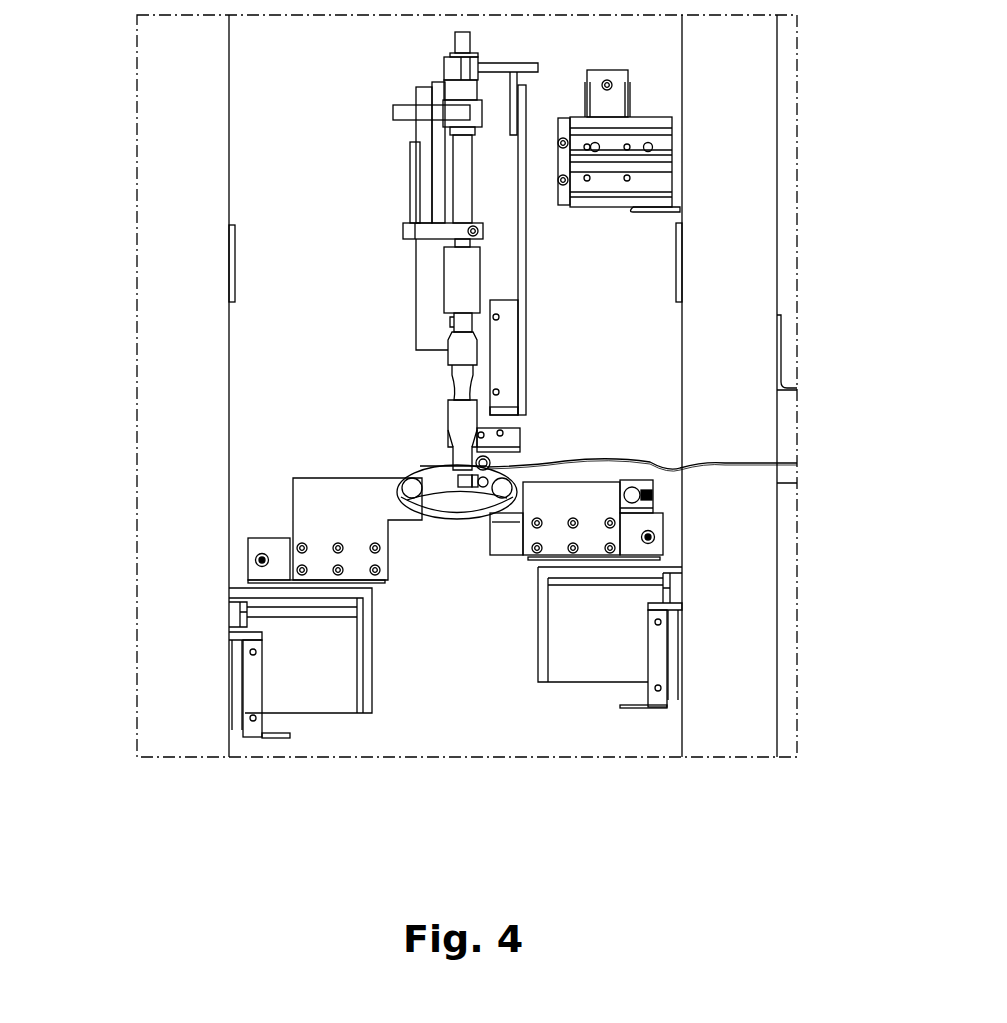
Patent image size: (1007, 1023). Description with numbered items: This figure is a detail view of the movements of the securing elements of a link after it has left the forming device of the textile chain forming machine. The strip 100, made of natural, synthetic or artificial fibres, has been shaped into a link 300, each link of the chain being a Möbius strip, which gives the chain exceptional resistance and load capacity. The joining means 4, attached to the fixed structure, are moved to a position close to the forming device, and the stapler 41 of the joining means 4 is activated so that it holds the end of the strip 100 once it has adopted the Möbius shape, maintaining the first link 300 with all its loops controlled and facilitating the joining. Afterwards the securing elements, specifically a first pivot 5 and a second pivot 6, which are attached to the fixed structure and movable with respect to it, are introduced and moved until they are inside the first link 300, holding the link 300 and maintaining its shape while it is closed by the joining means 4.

The joining means 4 is at (462, 422).
The stapler 41 is at (483, 450).
The strip 100 is at (632, 458).
The second pivot 6 is at (362, 505).
The first pivot 5 is at (560, 498).
The link 300 is at (457, 507).